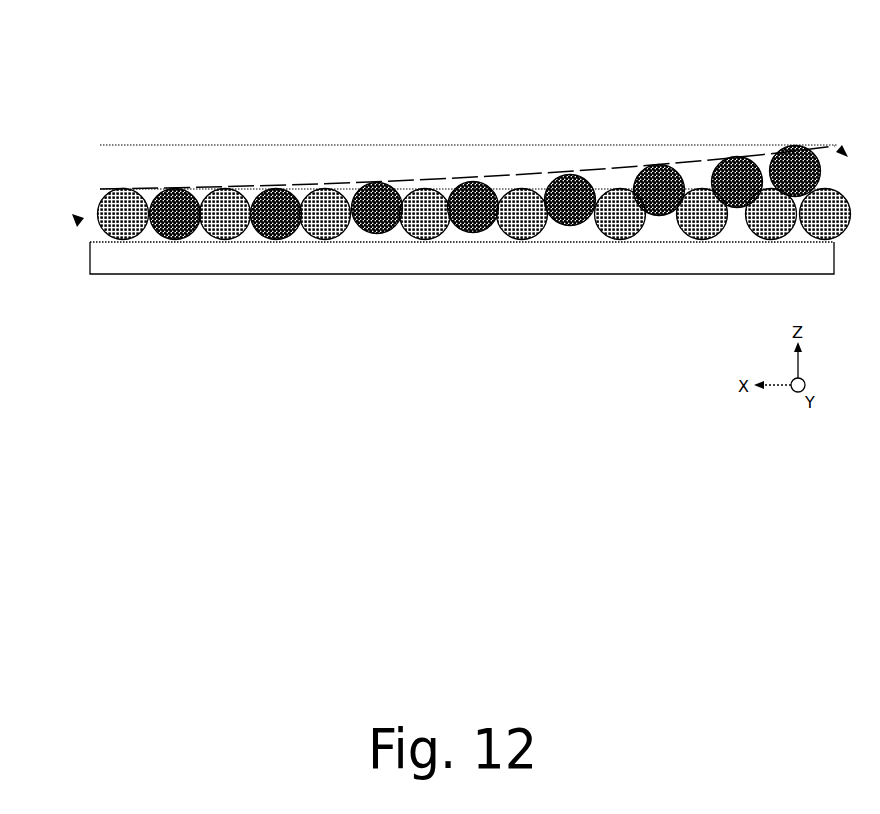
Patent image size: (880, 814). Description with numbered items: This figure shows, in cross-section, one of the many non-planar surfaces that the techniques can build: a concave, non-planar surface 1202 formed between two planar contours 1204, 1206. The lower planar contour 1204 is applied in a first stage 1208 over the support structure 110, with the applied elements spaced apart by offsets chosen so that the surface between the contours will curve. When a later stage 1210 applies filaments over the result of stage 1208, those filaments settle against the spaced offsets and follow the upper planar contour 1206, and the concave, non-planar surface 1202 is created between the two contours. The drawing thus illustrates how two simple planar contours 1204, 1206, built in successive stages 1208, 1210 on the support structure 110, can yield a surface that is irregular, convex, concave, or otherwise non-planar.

The planar contour 1204 is at (130, 190).
The planar contour 1206 is at (283, 145).
The concave, non-planar surface 1202 is at (514, 175).
The support structure 110 is at (673, 267).
The stage 1208 is at (76, 221).
The stage 1210 is at (841, 150).